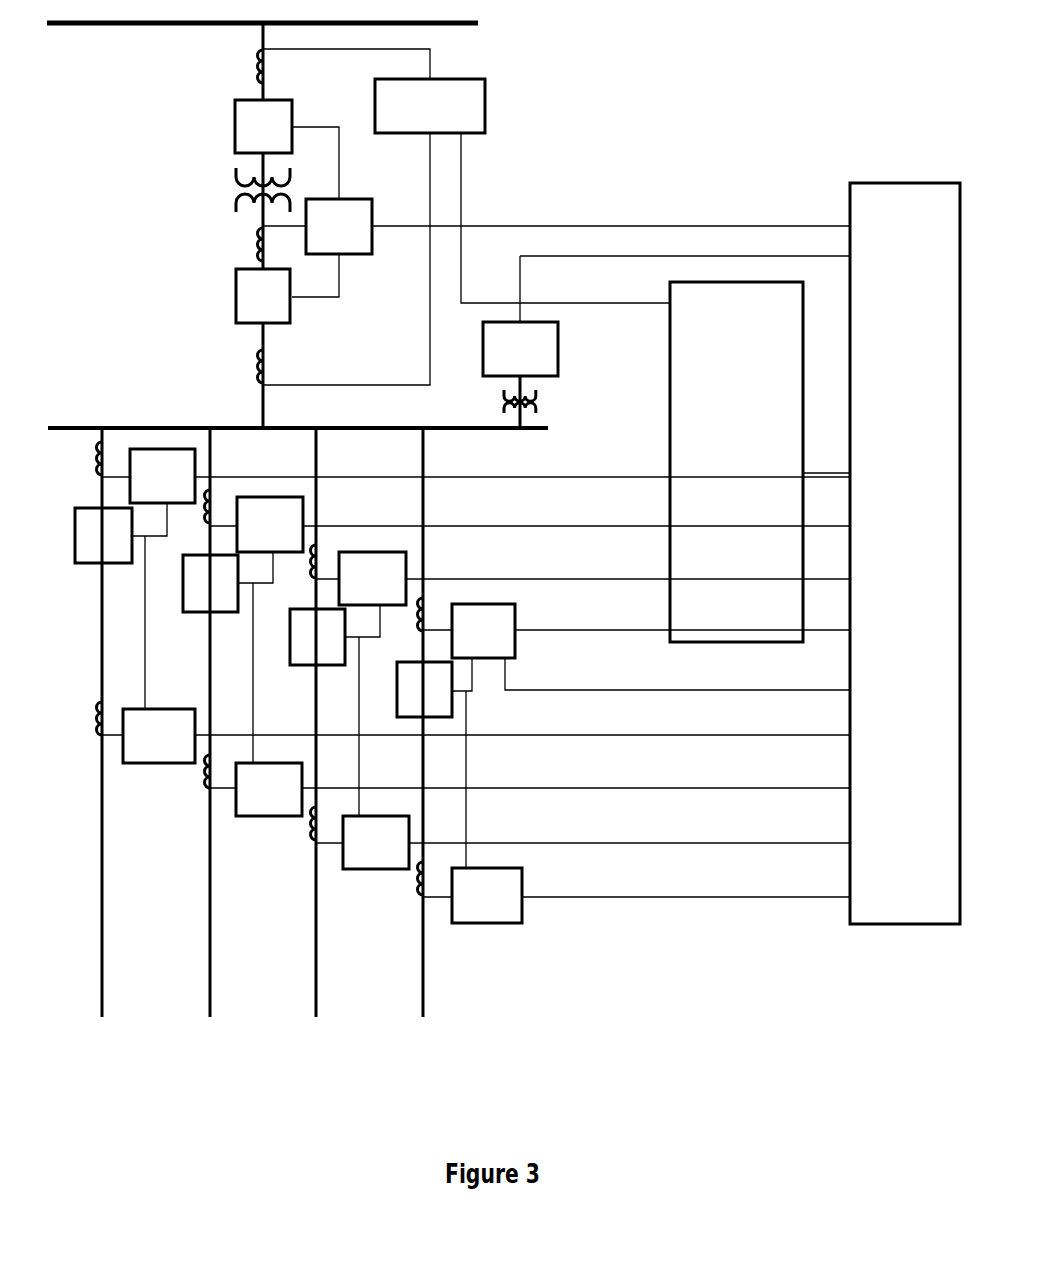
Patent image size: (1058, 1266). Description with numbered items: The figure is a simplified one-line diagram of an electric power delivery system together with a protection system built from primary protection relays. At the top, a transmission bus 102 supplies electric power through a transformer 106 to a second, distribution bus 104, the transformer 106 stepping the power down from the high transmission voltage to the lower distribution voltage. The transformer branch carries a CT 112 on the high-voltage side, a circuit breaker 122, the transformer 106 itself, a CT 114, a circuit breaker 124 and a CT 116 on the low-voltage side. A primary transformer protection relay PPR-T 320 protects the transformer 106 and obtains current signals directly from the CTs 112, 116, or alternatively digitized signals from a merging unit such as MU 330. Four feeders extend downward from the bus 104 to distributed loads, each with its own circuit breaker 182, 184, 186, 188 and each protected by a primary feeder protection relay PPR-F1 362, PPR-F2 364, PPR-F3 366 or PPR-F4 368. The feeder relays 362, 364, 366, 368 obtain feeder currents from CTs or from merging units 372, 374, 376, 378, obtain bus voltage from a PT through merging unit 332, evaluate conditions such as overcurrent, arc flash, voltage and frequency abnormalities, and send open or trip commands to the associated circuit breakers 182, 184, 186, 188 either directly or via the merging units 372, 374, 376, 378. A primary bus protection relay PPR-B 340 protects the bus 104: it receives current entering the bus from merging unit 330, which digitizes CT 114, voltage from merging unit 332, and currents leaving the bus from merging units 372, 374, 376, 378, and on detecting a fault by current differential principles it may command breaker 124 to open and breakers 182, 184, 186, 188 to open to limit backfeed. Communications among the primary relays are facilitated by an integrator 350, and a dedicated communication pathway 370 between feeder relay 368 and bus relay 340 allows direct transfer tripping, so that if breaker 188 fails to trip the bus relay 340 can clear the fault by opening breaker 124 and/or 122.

The bus 102 is at (120, 26).
The second bus 104 is at (74, 426).
The transformer 106 is at (233, 178).
The CT 112 is at (255, 75).
The CT 114 is at (255, 255).
The CT 116 is at (255, 360).
The circuit breaker 122 is at (235, 123).
The circuit breaker 124 is at (236, 297).
The circuit breaker 182 is at (88, 564).
The circuit breaker 184 is at (194, 614).
The circuit breaker 186 is at (302, 666).
The circuit breaker 188 is at (452, 705).
The primary transformer protection relay PPR-T 320 is at (440, 79).
The merging unit 330 is at (350, 198).
The merging unit 332 is at (558, 337).
The primary bus protection relay PPR-B 340 is at (905, 183).
The integrator 350 is at (670, 438).
The primary feeder protection relay PPR-F1 362 is at (196, 464).
The primary feeder protection relay PPR-F2 364 is at (303, 511).
The primary feeder protection relay PPR-F3 366 is at (406, 568).
The primary feeder protection relay PPR-F4 368 is at (515, 620).
The dedicated communication pathway 370 is at (638, 690).
The merging unit 372 is at (152, 764).
The merging unit 374 is at (264, 817).
The merging unit 376 is at (377, 869).
The merging unit 378 is at (489, 923).